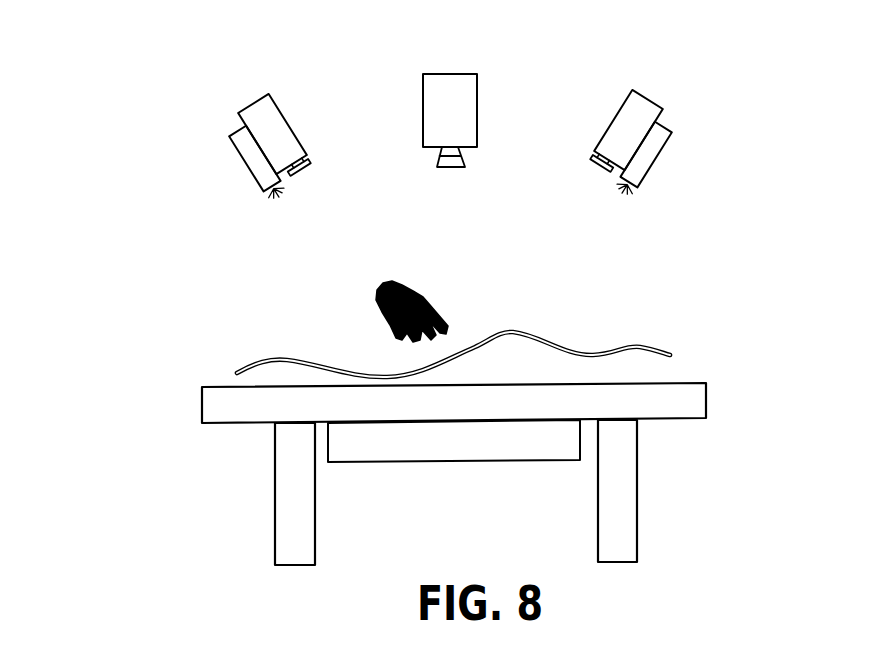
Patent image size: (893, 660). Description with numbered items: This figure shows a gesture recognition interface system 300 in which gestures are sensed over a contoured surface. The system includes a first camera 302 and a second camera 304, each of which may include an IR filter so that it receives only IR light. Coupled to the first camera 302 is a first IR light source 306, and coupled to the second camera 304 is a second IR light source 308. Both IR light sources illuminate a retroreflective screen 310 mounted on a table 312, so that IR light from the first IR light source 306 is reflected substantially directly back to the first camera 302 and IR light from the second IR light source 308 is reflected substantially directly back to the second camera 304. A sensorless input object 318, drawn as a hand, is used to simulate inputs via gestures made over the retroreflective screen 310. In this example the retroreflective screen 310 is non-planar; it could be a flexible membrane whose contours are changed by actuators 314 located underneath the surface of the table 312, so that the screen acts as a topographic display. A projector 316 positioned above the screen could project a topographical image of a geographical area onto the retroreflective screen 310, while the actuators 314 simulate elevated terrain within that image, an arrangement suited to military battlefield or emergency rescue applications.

The gesture recognition interface system 300 is at (130, 58).
The first camera 302 is at (284, 111).
The second camera 304 is at (605, 132).
The first IR light source 306 is at (247, 165).
The second IR light source 308 is at (653, 162).
The retroreflective screen 310 is at (655, 347).
The table 312 is at (708, 407).
The actuators 314 is at (478, 463).
The projector 316 is at (478, 88).
The sensorless input object 318 is at (425, 297).